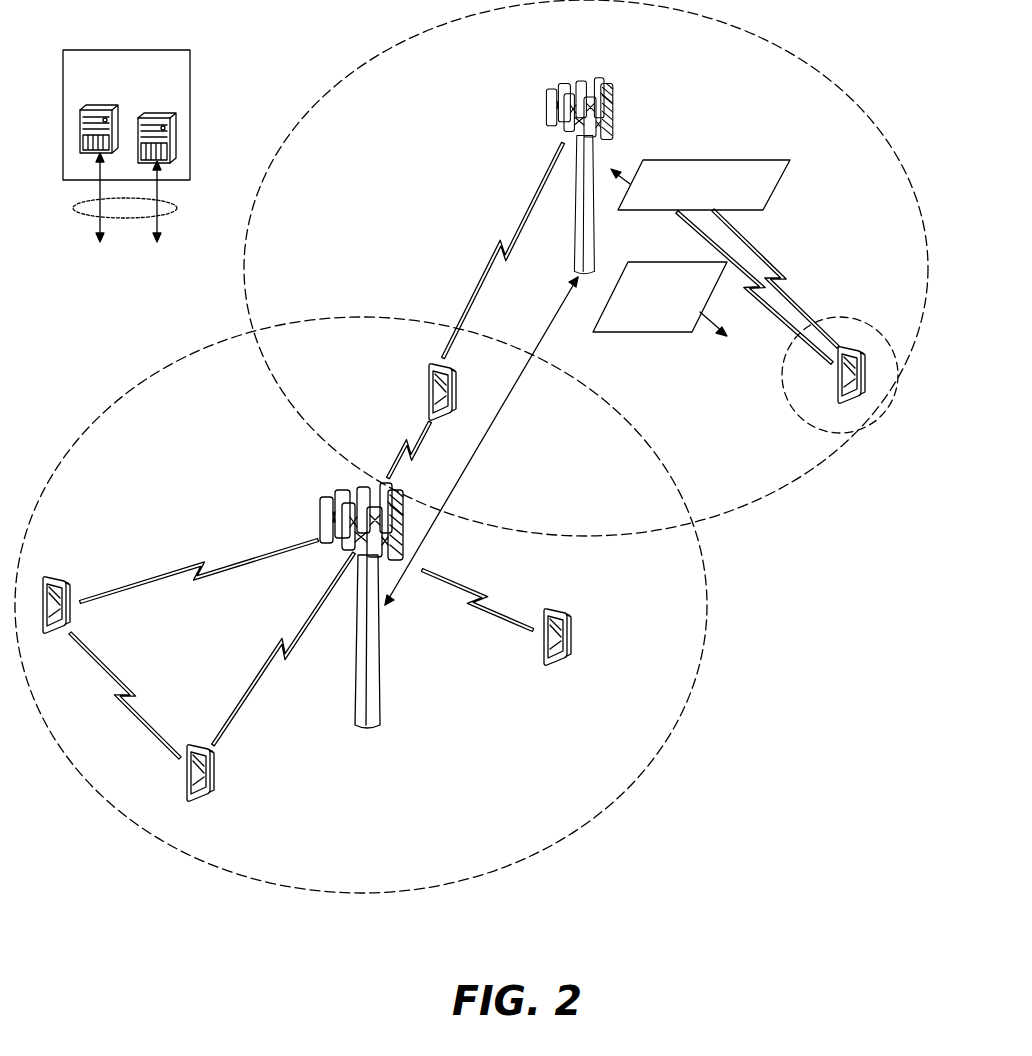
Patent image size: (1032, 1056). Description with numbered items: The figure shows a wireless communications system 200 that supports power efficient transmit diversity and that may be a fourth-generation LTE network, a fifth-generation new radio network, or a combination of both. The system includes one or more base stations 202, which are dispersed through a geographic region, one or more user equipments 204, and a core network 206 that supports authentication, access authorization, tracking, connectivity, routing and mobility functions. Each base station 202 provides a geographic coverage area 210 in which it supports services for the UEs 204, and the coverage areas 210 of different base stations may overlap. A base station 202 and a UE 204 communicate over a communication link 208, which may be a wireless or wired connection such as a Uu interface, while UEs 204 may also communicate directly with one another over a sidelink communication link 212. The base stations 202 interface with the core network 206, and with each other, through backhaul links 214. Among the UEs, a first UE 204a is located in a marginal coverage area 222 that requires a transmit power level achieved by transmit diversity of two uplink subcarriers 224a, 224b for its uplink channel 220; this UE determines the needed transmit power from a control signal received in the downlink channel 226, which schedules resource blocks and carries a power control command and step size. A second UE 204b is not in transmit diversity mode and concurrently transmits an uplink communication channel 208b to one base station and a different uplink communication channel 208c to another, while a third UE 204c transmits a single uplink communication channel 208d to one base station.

The wireless communications system 200 is at (284, 43).
The base station 202 is at (573, 267).
The user equipment 204 is at (80, 615).
The first UE 204a is at (870, 385).
The second UE 204b is at (432, 397).
The third UE 204c is at (570, 642).
The core network 206 is at (110, 99).
The communication link 208 is at (187, 562).
The uplink communication channel 208b is at (402, 440).
The uplink communication channel 208c is at (470, 295).
The uplink communication channel 208d is at (487, 613).
The geographic coverage area 210 is at (778, 493).
The communication link 212 is at (138, 727).
The backhaul link 214 is at (172, 213).
The uplink channel 220 is at (690, 207).
The marginal coverage area 222 is at (810, 435).
The uplink subcarrier 224a is at (790, 335).
The uplink subcarrier 224b is at (800, 303).
The downlink channel 226 is at (644, 324).